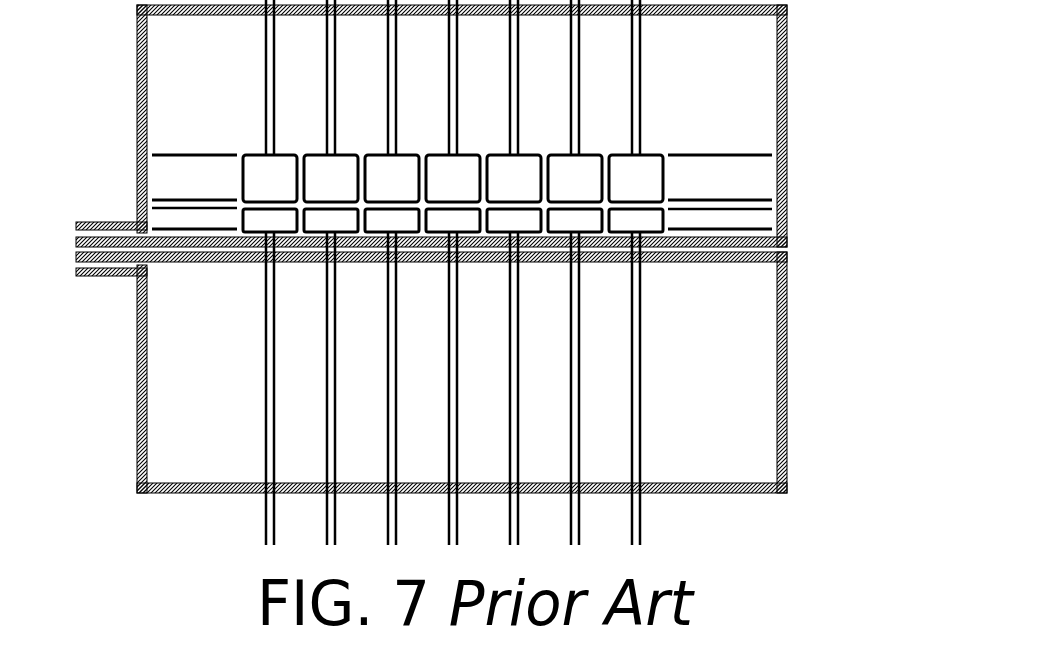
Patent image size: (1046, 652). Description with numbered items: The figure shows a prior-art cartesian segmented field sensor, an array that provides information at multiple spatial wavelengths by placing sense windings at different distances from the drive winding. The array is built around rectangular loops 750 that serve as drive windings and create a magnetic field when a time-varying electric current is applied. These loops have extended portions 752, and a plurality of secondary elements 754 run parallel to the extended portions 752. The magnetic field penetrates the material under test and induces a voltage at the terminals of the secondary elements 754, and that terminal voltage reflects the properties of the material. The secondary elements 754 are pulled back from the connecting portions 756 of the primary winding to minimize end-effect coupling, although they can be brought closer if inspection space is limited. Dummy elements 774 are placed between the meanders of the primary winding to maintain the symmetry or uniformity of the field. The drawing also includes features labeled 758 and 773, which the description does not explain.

The rectangular loop 750 is at (137, 51).
The extended portion 752 is at (715, 244).
The secondary element 754 is at (250, 216).
The connecting portion of the primary winding 756 is at (782, 385).
The electrode pad 758 is at (655, 185).
The vertical line 773 is at (642, 507).
The dummy element 774 is at (165, 200).